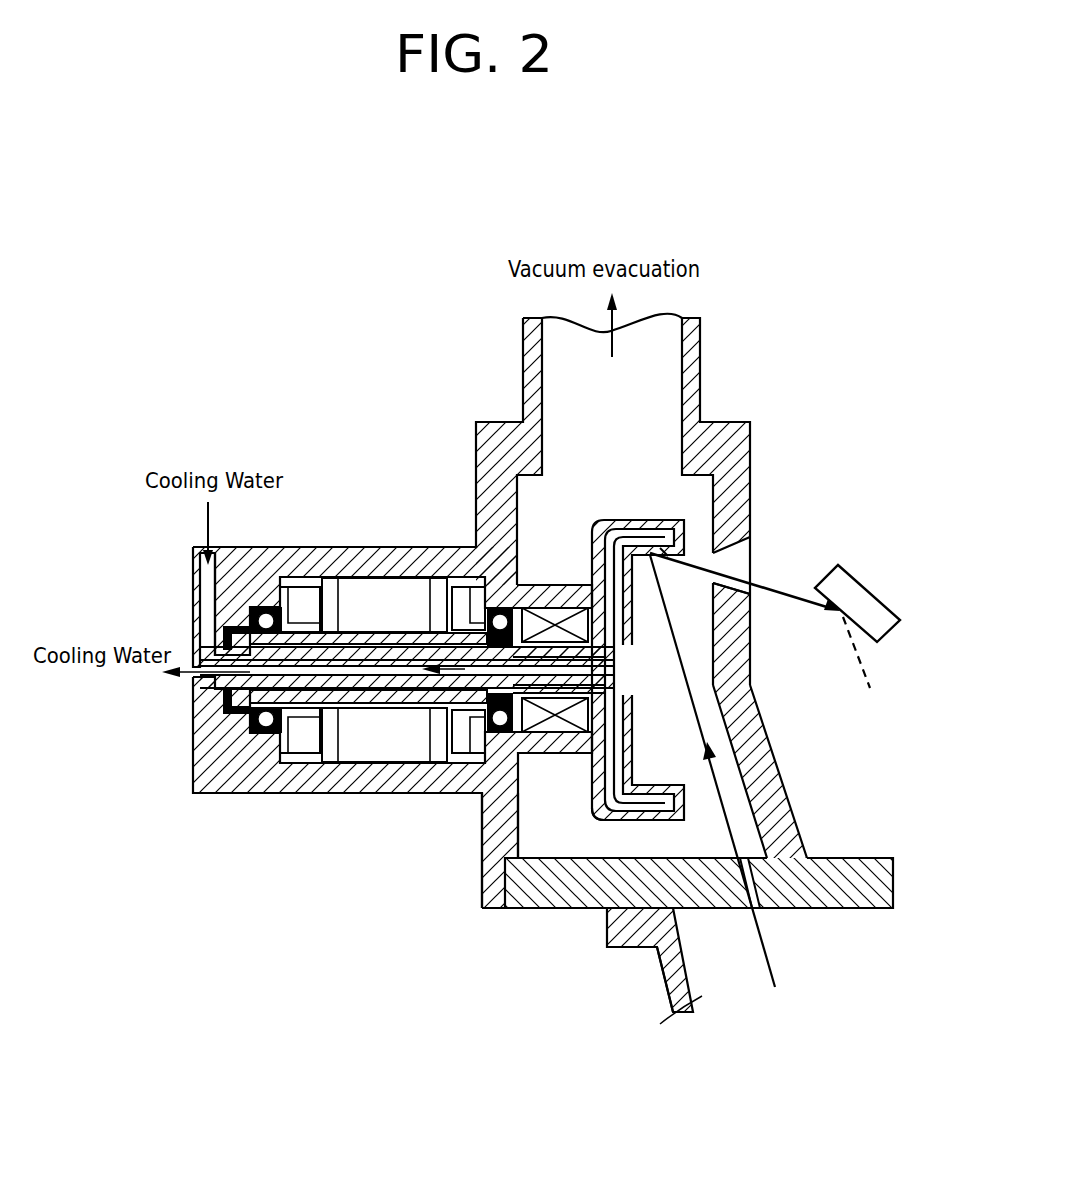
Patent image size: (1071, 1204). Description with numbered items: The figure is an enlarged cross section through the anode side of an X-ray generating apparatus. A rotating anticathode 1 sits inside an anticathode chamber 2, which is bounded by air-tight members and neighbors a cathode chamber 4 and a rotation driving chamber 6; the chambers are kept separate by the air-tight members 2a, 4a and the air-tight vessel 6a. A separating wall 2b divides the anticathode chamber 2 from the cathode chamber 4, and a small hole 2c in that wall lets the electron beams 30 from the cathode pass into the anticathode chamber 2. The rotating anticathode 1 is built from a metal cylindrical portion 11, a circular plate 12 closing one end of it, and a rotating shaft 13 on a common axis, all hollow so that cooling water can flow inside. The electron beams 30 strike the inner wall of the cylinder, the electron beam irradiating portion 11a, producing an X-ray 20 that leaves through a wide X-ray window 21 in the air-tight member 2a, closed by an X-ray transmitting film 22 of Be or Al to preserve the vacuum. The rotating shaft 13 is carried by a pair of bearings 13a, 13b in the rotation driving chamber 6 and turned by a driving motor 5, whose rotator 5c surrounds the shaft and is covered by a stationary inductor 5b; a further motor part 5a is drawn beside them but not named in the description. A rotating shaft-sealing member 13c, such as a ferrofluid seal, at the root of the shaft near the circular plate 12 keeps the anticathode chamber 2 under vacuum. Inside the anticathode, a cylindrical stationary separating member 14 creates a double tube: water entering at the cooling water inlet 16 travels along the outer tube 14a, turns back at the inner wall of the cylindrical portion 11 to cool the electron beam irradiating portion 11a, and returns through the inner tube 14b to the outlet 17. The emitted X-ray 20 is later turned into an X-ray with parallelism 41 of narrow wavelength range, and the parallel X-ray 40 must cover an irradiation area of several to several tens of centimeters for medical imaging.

The rotating anticathode 1 is at (544, 705).
The anticathode chamber 2 is at (700, 498).
The air-tight member 2a is at (800, 830).
The separating wall 2b is at (550, 905).
The small hole 2c is at (753, 913).
The cathode chamber 4 is at (690, 985).
The air-tight member 4a is at (661, 965).
The driving motor 5 is at (374, 592).
The rotor yoke 5a is at (313, 637).
The stationary inductor 5b is at (389, 590).
The rotator 5c is at (297, 593).
The rotation driving chamber 6 is at (424, 541).
The air-tight vessel 6a is at (482, 893).
The cylindrical portion 11 is at (640, 821).
The electron beam irradiating portion 11a is at (648, 558).
The circular plate 12 is at (588, 802).
The rotating shaft 13 is at (312, 695).
The bearing 13a is at (518, 748).
The bearing 13b is at (272, 735).
The rotating shaft-sealing member 13c is at (557, 607).
The stationary separating member 14 is at (364, 672).
The outer tube 14a is at (467, 650).
The inner tube 14b is at (418, 695).
The cooling water inlet 16 is at (208, 612).
The outlet 17 is at (183, 678).
The X-ray 20 is at (770, 591).
The X-ray window 21 is at (750, 600).
The X-ray transmitting film 22 is at (718, 557).
The electron beams 30 is at (770, 965).
The X-ray with parallelism 40 is at (862, 665).
The X-ray with parallelism 41 is at (876, 598).